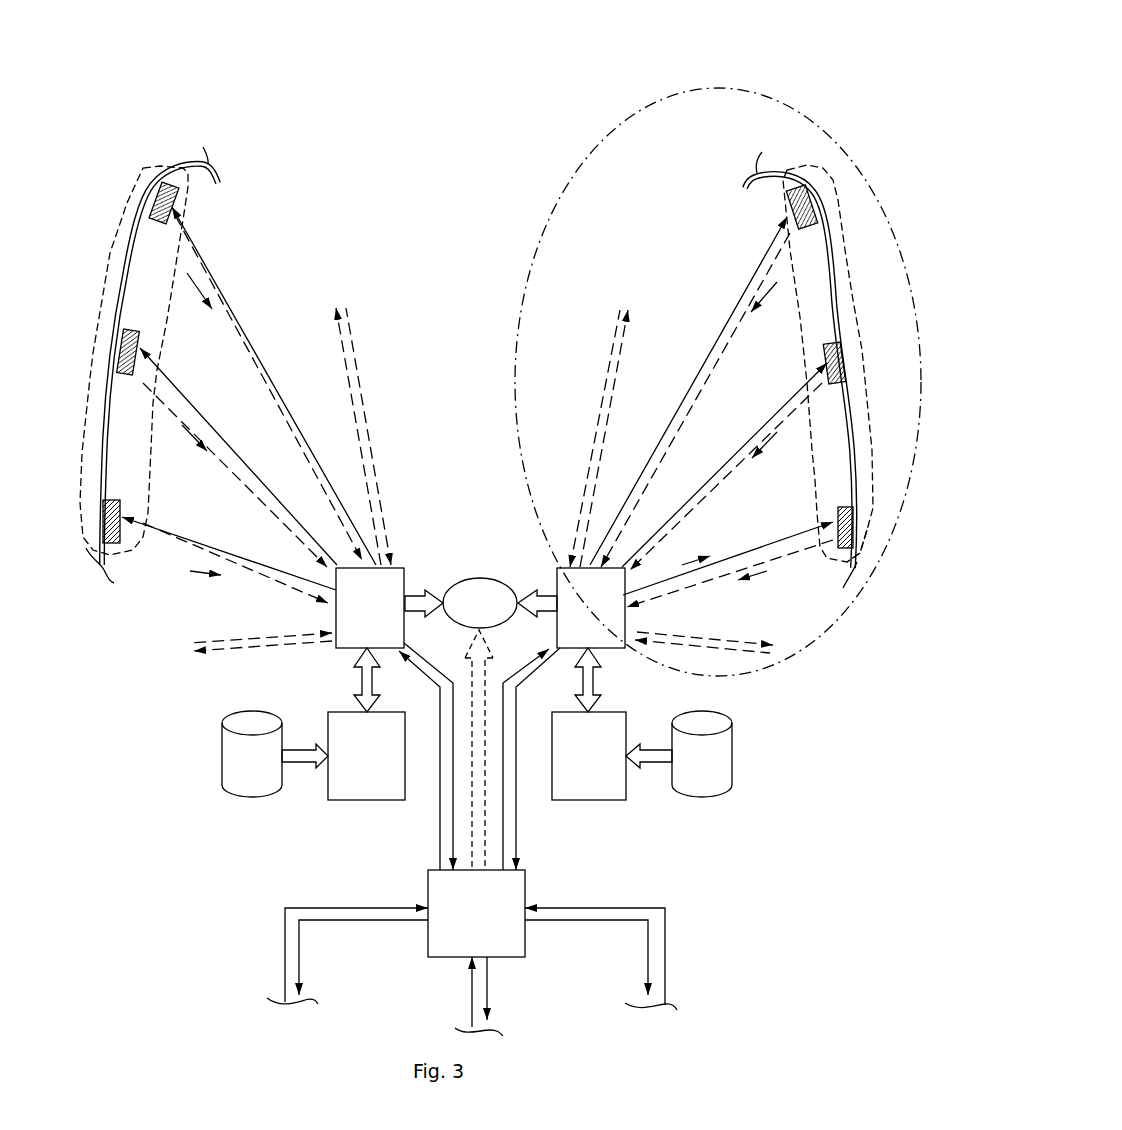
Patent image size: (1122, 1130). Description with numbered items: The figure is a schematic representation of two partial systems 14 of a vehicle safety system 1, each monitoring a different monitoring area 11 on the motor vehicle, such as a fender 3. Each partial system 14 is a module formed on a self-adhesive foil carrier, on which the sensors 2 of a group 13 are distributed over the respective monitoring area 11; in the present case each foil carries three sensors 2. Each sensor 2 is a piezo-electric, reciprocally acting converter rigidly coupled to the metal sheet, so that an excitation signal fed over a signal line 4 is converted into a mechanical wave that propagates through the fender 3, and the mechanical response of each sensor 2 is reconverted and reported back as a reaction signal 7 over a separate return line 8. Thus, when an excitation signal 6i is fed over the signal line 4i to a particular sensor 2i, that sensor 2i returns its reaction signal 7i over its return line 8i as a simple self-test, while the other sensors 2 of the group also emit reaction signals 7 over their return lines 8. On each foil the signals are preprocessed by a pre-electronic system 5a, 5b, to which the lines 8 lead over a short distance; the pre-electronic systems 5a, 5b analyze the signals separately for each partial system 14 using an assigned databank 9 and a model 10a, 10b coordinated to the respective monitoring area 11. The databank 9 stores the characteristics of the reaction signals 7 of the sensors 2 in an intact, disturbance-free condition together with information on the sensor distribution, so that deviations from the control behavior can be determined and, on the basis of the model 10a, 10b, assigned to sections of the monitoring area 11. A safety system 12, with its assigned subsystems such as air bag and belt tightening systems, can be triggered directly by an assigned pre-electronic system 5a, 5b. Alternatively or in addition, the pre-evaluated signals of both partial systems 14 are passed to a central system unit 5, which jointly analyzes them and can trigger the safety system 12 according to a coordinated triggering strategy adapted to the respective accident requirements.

The safety system 1 is at (719, 62).
The sensor 2 is at (165, 183).
The particular sensor 2i is at (877, 510).
The fender 3 is at (857, 410).
The signal line 4 is at (190, 253).
The signal line of particular sensor 4i is at (763, 540).
The central system unit 5 is at (472, 953).
The pre-electronic system 5a is at (394, 719).
The pre-electronic system 5b is at (564, 719).
The excitation signal 6i is at (730, 571).
The reaction signal 7 is at (481, 435).
The reaction signal of particular sensor 7i is at (752, 587).
The return line 8 is at (185, 243).
The return line of particular sensor 8i is at (767, 558).
The databank 9 is at (477, 754).
The model 10a is at (366, 756).
The model 10b is at (589, 756).
The monitoring area 11 is at (120, 230).
The safety system 12 is at (480, 724).
The group 13 is at (118, 182).
The partial system 14 is at (777, 97).